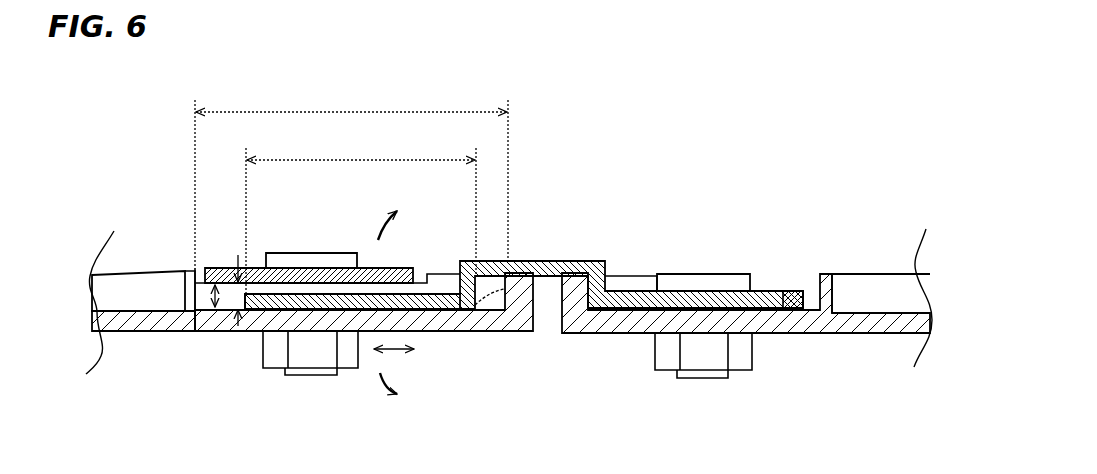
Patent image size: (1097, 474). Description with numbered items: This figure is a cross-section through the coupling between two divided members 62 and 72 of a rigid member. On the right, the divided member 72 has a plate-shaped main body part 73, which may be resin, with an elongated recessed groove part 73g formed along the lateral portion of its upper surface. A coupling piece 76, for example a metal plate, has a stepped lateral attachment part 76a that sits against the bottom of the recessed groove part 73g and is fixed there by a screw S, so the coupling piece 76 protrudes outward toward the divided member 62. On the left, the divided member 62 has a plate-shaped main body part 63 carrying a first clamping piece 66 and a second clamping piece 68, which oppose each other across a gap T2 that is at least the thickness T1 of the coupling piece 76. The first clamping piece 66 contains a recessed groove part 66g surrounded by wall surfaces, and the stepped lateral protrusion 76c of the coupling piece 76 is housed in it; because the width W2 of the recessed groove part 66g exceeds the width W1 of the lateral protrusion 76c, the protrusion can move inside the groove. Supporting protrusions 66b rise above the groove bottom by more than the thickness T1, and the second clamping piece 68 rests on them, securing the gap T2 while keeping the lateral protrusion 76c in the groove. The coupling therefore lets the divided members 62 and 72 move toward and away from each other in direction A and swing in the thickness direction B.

The divided member 62 is at (139, 256).
The main body part 63 is at (122, 333).
The first clamping piece 66 is at (490, 331).
The supporting protrusion 66b is at (403, 270).
The recessed groove part 66g is at (506, 292).
The second clamping piece 68 is at (215, 268).
The divided member 72 is at (866, 240).
The main body part 73 is at (843, 334).
The recessed groove part 73g is at (783, 291).
The coupling piece 76 is at (540, 261).
The lateral attachment part 76a is at (634, 287).
The lateral protrusion 76c is at (283, 293).
The screw S is at (322, 253).
The direction A is at (401, 352).
The thickness direction B is at (383, 224).
The thickness of the coupling piece T1 is at (215, 311).
The gap T2 is at (200, 320).
The width of the lateral protrusion W1 is at (361, 214).
The width of the recessed groove part W2 is at (351, 178).